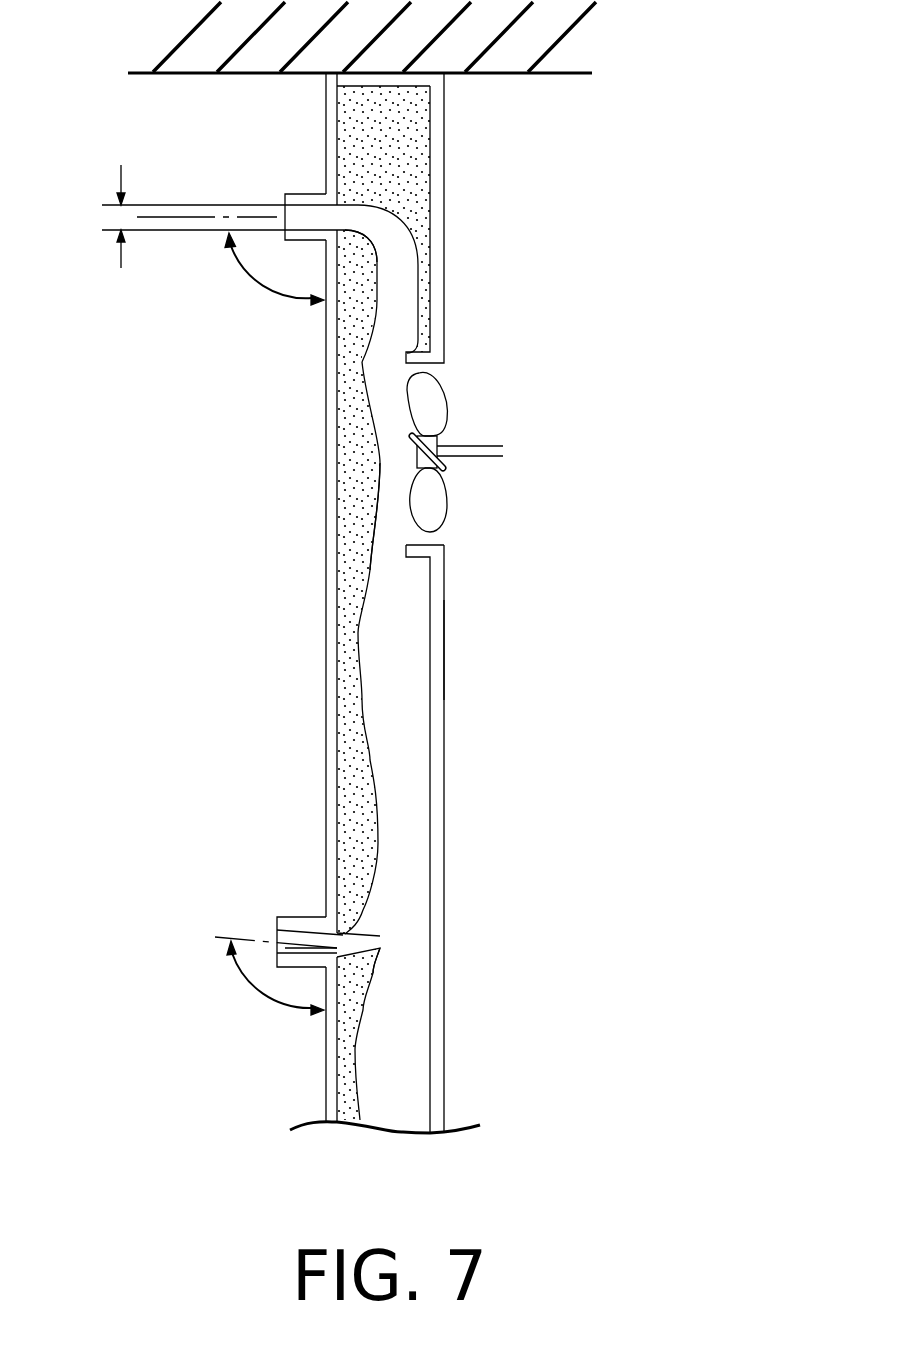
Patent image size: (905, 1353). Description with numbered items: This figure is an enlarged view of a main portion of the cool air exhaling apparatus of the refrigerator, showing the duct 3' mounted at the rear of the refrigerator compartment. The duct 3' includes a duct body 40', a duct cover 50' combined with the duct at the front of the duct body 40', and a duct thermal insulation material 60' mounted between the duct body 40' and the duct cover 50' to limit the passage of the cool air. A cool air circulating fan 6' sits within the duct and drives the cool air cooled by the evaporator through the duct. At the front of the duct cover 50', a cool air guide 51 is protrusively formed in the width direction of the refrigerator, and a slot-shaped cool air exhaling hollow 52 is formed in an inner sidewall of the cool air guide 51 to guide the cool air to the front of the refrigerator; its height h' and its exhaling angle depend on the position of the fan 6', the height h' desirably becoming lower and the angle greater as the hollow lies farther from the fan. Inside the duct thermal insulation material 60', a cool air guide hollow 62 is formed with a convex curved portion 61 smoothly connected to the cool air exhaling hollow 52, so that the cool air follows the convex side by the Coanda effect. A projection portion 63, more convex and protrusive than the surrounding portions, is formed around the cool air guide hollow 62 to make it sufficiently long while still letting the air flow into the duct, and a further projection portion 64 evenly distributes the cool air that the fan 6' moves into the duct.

The duct 3' is at (526, 644).
The cool air circulating fan 6' is at (476, 448).
The duct body 40' is at (485, 602).
The duct cover 50' is at (255, 597).
The cool air guide 51 is at (285, 194).
The cool air exhaling hollow 52 is at (297, 213).
The duct thermal insulation material 60' is at (301, 603).
The convex curved portion 61 is at (372, 275).
The cool air guide hollow 62 is at (375, 226).
The projection portion 63 is at (368, 313).
The projection portion 64 is at (370, 485).
The height of the cool air exhaling hollow h' is at (93, 216).